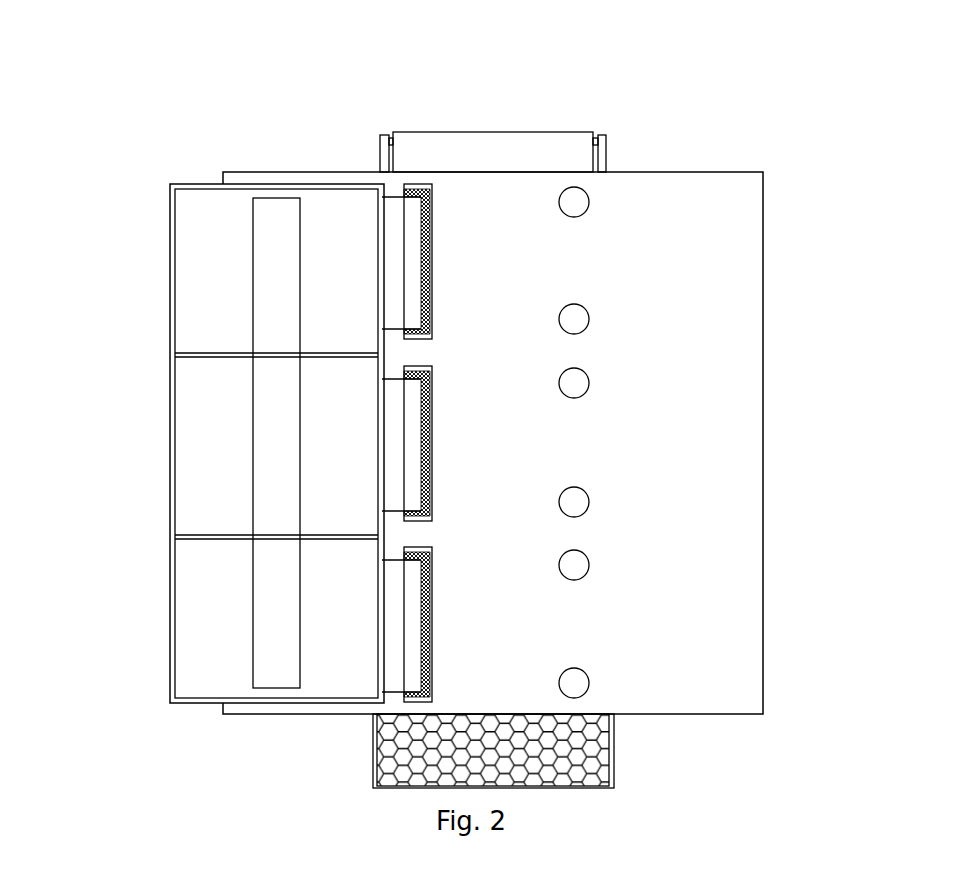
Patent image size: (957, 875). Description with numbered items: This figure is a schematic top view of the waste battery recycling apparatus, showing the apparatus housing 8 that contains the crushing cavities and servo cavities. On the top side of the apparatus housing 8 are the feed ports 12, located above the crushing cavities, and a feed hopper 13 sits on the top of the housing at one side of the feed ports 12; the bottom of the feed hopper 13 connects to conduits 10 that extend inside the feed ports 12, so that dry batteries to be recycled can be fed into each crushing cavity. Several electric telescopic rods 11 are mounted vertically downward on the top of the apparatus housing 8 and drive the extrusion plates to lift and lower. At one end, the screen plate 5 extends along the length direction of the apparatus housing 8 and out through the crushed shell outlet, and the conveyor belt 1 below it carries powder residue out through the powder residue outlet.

The conveyor belt 1 is at (473, 149).
The screen plate 5 is at (535, 740).
The apparatus housing 8 is at (670, 301).
The conduit 10 is at (398, 257).
The electric telescopic rod 11 is at (574, 201).
The feed port 12 is at (418, 548).
The feed hopper 13 is at (213, 317).